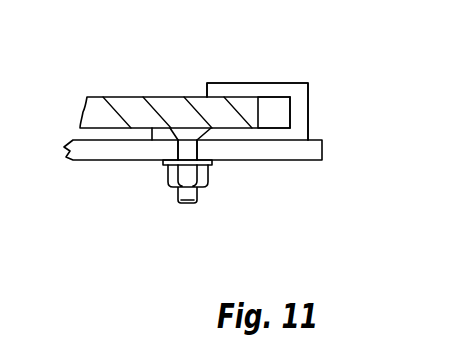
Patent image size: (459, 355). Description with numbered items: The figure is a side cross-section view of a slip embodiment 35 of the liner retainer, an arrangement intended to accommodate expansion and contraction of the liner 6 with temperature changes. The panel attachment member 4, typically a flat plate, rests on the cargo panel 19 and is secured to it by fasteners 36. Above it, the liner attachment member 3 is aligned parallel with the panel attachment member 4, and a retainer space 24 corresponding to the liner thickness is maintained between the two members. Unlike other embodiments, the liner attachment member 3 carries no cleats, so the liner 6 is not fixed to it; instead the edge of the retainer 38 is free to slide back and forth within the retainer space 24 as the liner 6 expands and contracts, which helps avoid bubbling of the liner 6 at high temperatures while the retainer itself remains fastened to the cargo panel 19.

The liner attachment member 3 is at (265, 83).
The panel attachment member 4 is at (162, 133).
The liner 6 is at (120, 97).
The cargo panel 19 is at (305, 160).
The retainer space 24 is at (280, 110).
The slip embodiment 35 is at (308, 112).
The fasteners 36 is at (188, 150).
The edge of the retainer 38 is at (260, 116).